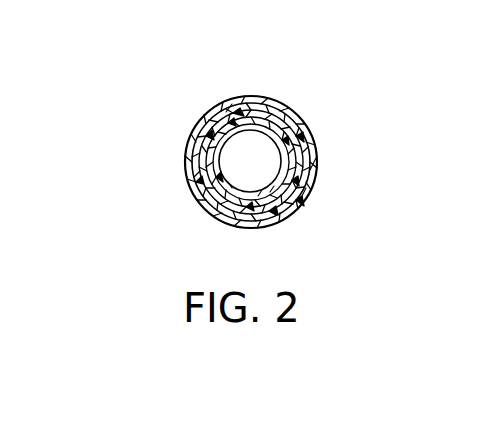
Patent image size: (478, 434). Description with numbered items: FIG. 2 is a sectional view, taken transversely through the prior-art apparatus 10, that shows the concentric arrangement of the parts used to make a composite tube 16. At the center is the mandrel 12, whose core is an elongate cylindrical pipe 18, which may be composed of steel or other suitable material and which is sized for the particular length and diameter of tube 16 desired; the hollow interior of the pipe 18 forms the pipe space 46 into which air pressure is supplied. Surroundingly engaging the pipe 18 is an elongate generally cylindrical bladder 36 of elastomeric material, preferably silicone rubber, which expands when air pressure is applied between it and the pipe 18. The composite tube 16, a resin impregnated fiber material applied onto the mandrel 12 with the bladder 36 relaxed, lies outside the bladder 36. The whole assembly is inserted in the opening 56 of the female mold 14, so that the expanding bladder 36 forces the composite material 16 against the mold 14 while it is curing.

The apparatus 10 is at (332, 99).
The mandrel 12 is at (301, 146).
The elongate cylindrical mold 14 is at (226, 100).
The composite tube 16 is at (279, 100).
The elongate cylindrical pipe 18 is at (263, 200).
The bladder 36 is at (296, 194).
The pipe space 46 is at (234, 177).
The opening 56 is at (200, 128).